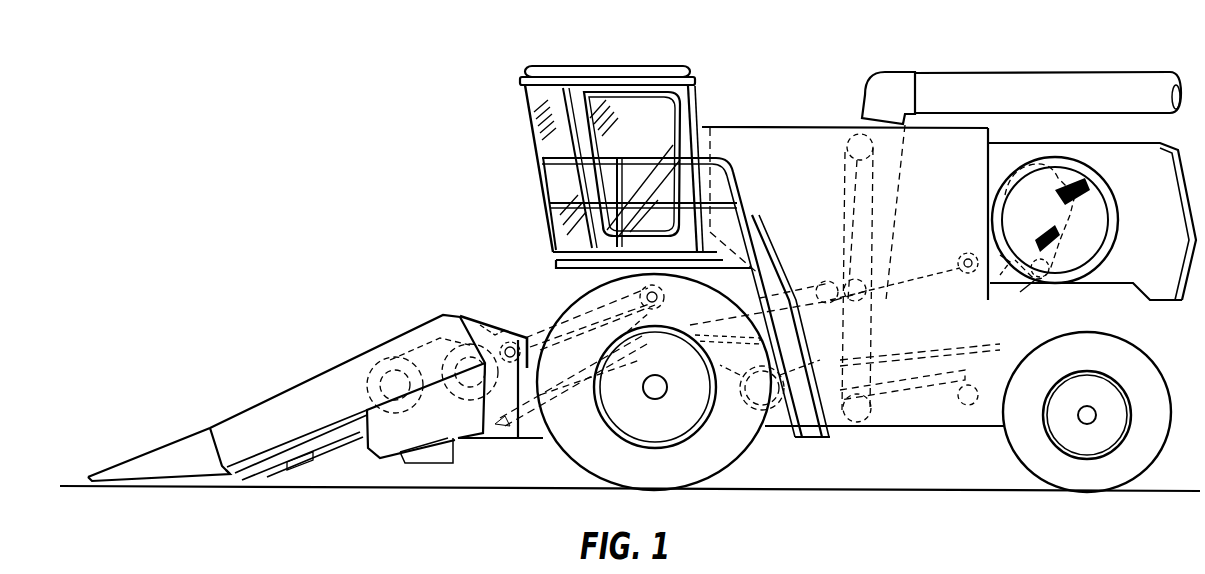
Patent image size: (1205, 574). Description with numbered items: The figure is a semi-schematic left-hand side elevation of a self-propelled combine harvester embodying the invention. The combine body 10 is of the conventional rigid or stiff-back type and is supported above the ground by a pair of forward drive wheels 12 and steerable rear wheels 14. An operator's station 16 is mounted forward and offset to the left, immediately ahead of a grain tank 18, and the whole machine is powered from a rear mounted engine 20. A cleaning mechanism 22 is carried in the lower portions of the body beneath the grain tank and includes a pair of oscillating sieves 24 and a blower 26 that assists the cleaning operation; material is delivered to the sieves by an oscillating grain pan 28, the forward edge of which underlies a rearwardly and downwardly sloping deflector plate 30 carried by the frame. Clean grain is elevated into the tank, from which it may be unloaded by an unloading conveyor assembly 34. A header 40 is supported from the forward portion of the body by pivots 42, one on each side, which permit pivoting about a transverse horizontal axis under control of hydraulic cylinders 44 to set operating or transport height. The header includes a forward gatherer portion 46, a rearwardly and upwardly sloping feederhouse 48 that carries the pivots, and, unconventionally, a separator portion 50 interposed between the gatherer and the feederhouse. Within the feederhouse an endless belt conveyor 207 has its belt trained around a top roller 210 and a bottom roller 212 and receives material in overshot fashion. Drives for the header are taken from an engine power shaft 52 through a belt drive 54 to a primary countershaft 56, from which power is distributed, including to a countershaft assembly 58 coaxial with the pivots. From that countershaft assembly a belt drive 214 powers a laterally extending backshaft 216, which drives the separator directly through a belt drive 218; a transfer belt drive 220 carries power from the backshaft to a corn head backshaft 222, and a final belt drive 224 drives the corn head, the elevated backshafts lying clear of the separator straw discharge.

The combine body 10 is at (774, 52).
The forward drive wheels 12 is at (745, 458).
The steerable rear wheels 14 is at (1162, 450).
The operator cab 16 is at (578, 66).
The grain tank 18 is at (783, 127).
The engine 20 is at (1082, 215).
The cleaning mechanism 22 is at (938, 326).
The oscillating sieves 24 is at (908, 400).
The blower 26 is at (668, 387).
The oscillating grain pan 28 is at (760, 346).
The deflector plate 30 is at (690, 325).
The unloading conveyor assembly 34 is at (962, 72).
The header 40 is at (350, 288).
The pivots 42 is at (776, 304).
The hydraulic cylinders 44 is at (536, 440).
The gatherer portion 46 is at (282, 372).
The feederhouse 48 is at (535, 245).
The separator portion 50 is at (440, 302).
The engine power shaft 52 is at (1048, 278).
The belt drive 54 is at (1000, 255).
The primary countershaft 56 is at (957, 262).
The countershaft assembly 58 is at (661, 297).
The endless belt conveyor 207 is at (566, 402).
The top roller 210 is at (500, 440).
The bottom roller 212 is at (645, 320).
The belt drive 214 is at (583, 310).
The backshaft 216 is at (514, 342).
The belt drive 218 is at (474, 344).
The transfer belt drive 220 is at (525, 325).
The corn head backshaft 222 is at (595, 392).
The final belt drive 224 is at (395, 358).